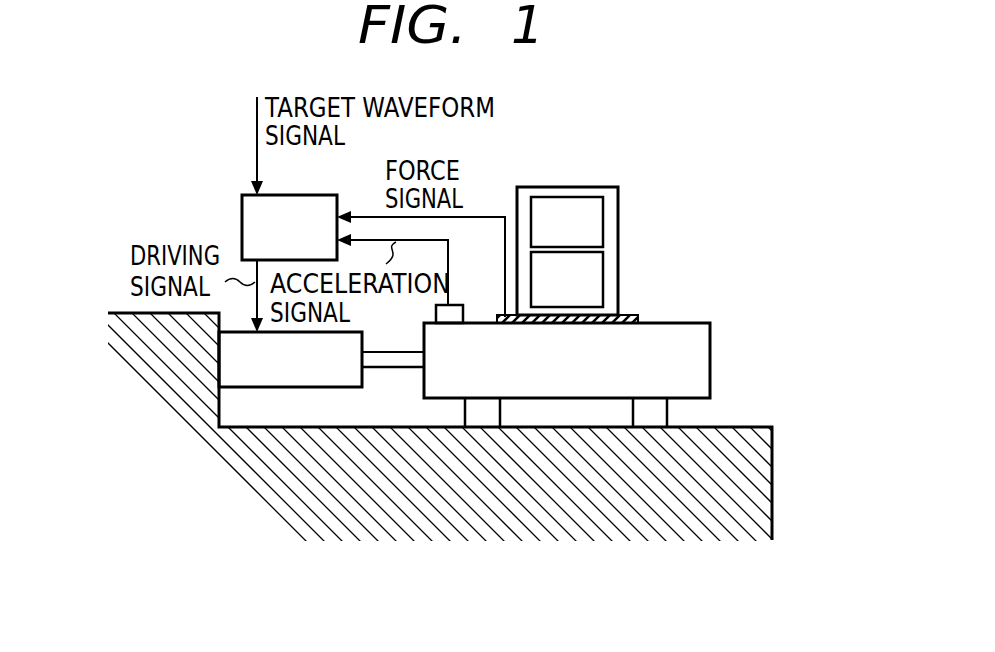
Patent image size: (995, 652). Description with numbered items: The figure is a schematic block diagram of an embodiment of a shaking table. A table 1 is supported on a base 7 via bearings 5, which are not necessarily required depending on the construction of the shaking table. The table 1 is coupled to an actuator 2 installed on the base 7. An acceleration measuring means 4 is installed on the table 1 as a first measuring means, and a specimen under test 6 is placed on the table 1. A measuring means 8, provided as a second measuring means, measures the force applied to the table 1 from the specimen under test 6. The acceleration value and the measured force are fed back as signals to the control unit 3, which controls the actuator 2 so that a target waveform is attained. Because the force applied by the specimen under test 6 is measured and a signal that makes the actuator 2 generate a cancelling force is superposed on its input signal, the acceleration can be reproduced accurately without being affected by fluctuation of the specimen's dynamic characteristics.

The table 1 is at (710, 342).
The actuator 2 is at (326, 389).
The control unit 3 is at (242, 216).
The acceleration measuring means 4 is at (455, 305).
The bearings 5 is at (633, 410).
The specimen under test 6 is at (618, 212).
The base 7 is at (212, 530).
The measuring means 8 is at (630, 315).